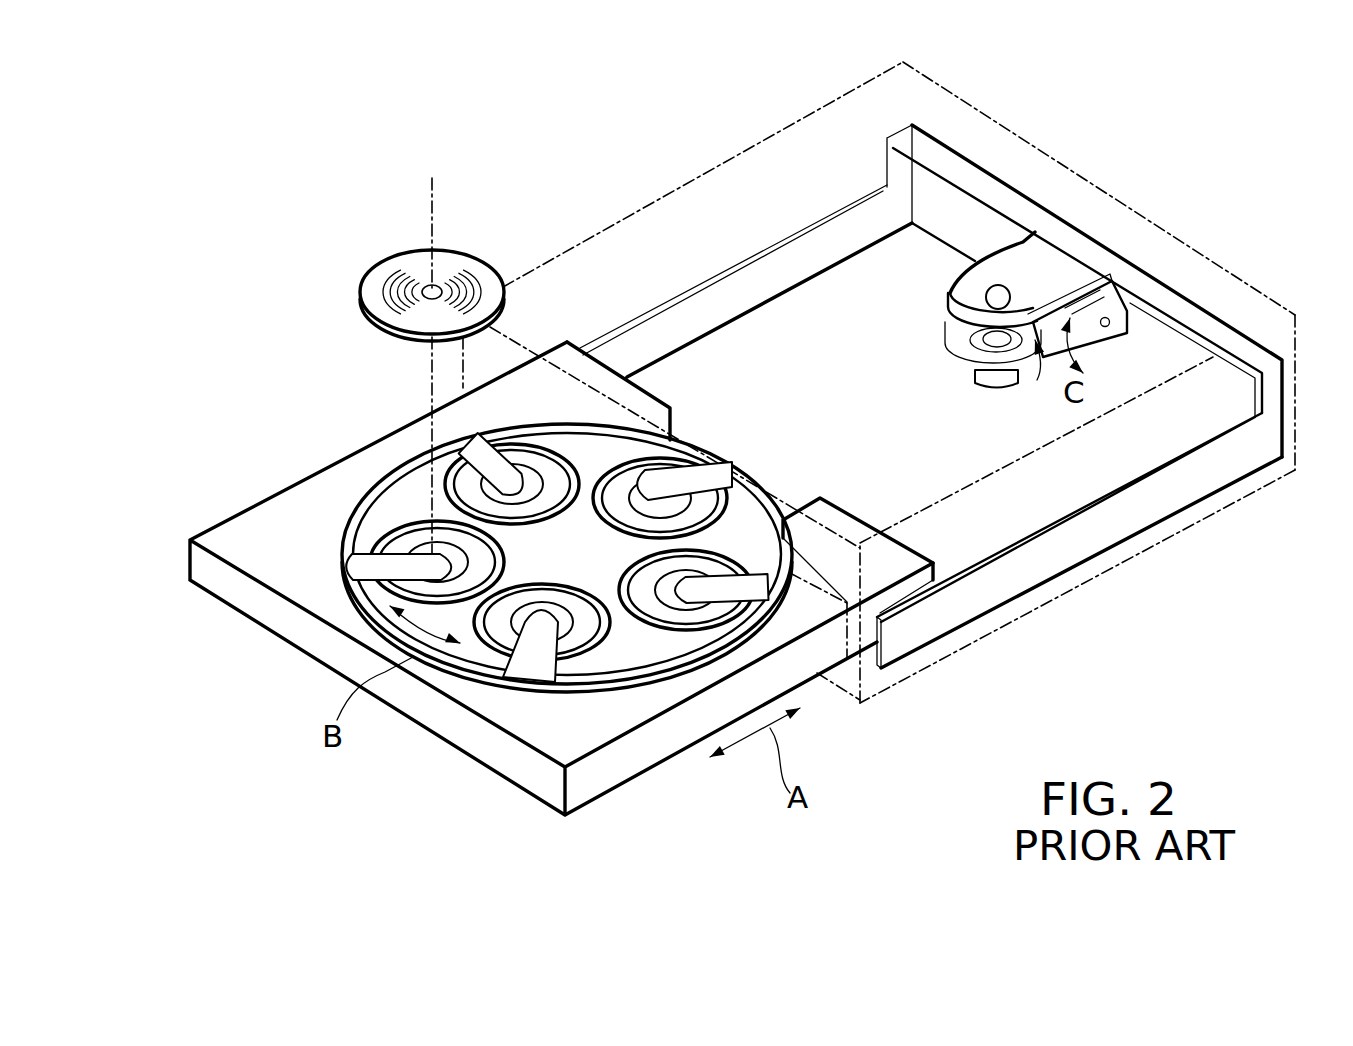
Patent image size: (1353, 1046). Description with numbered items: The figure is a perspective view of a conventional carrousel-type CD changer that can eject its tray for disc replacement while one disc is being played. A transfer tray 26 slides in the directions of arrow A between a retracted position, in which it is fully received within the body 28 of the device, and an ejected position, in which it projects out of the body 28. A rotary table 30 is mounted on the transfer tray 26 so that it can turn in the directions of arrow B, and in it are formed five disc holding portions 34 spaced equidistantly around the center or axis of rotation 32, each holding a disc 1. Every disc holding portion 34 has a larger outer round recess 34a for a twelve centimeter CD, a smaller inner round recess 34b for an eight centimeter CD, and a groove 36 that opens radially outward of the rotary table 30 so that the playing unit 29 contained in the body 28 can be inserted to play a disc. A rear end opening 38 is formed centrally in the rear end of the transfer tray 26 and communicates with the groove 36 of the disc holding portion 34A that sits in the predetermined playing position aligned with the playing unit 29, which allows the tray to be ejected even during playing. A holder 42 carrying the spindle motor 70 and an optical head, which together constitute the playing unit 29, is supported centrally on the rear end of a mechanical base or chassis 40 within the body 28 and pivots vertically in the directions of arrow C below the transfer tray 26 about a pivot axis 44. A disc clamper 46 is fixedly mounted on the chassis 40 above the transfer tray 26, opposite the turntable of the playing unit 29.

The disc 1 is at (374, 272).
The transfer tray 26 is at (267, 490).
The body 28 is at (642, 207).
The playing unit 29 is at (1037, 380).
The rotary table 30 is at (400, 492).
The center or axis of rotation 32 is at (572, 600).
The disc holding portion 34 is at (372, 590).
The outer round recess 34a is at (608, 650).
The inner round recess 34b is at (580, 637).
The disc holding portion in disc playing position 34A is at (703, 587).
The groove 36 is at (637, 490).
The rear end opening 38 is at (670, 420).
The mechanical base or chassis 40 is at (1190, 480).
The holder 42 is at (953, 333).
The pivot axis 44 is at (1123, 323).
The disc clamper 46 is at (1011, 287).
The spindle motor 70 is at (1010, 390).